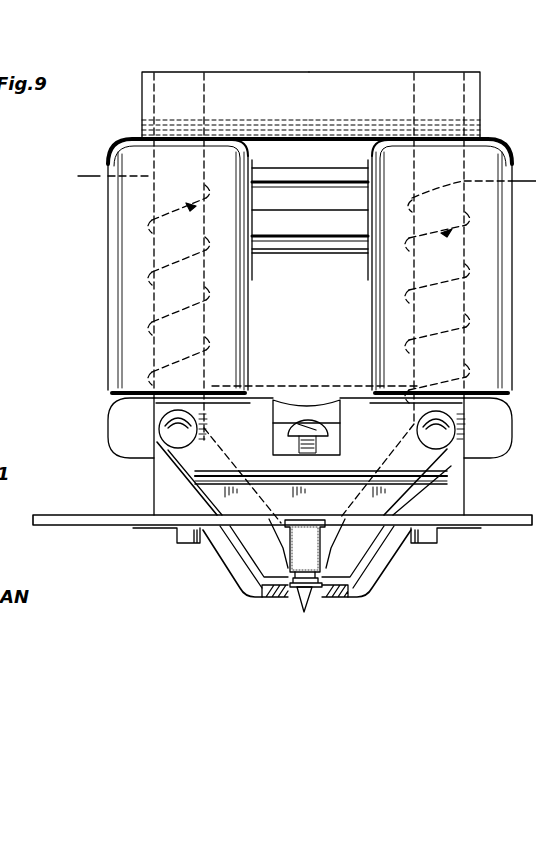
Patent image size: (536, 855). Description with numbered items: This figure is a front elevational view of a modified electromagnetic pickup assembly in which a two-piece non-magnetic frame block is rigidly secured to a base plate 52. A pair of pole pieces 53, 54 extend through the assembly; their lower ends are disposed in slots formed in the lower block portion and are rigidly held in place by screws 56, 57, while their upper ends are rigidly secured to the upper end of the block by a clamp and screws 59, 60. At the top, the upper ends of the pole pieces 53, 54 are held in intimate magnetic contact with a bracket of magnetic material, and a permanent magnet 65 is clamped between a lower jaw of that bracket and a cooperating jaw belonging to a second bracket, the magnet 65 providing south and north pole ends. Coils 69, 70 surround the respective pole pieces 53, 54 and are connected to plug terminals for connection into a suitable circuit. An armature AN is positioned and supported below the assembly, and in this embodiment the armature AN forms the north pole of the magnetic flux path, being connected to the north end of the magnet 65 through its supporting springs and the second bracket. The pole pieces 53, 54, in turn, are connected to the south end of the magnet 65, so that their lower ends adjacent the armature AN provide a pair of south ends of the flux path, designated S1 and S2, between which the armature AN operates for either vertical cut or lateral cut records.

The base plate 52 is at (132, 520).
The pole piece 53 is at (173, 107).
The pole piece 54 is at (450, 102).
The screw 56 is at (173, 438).
The screw 57 is at (446, 434).
The screw 59 is at (137, 135).
The screw 60 is at (483, 134).
The permanent magnet 65 is at (292, 262).
The coil 69 is at (130, 305).
The coil 70 is at (487, 278).
The south end of flux path S1 is at (273, 560).
The south end of flux path S2 is at (341, 560).
The armature AN is at (327, 593).